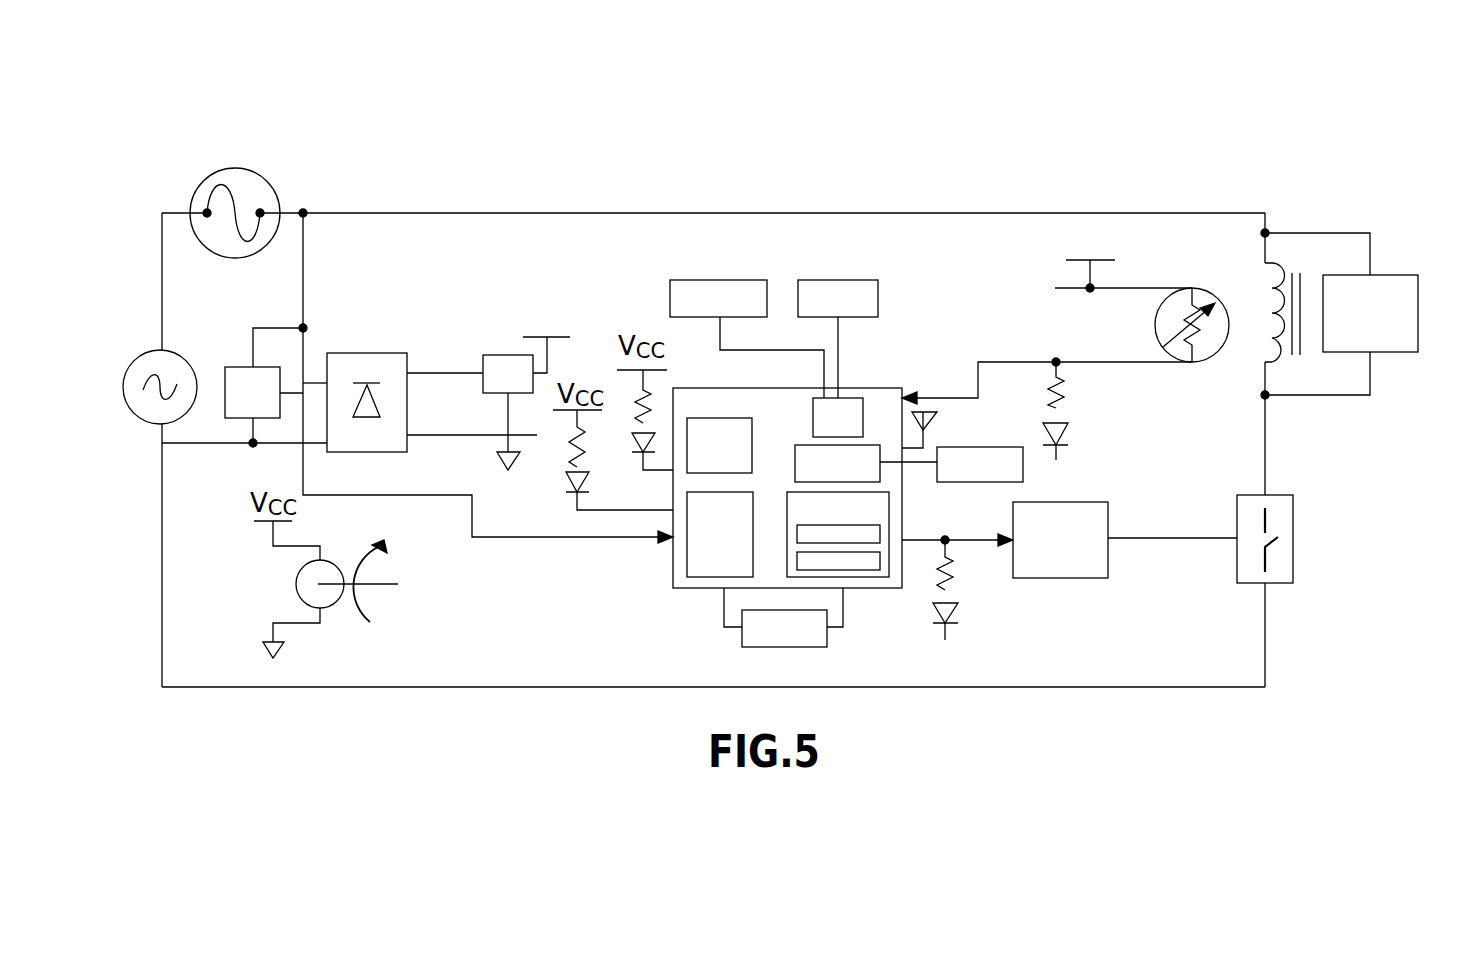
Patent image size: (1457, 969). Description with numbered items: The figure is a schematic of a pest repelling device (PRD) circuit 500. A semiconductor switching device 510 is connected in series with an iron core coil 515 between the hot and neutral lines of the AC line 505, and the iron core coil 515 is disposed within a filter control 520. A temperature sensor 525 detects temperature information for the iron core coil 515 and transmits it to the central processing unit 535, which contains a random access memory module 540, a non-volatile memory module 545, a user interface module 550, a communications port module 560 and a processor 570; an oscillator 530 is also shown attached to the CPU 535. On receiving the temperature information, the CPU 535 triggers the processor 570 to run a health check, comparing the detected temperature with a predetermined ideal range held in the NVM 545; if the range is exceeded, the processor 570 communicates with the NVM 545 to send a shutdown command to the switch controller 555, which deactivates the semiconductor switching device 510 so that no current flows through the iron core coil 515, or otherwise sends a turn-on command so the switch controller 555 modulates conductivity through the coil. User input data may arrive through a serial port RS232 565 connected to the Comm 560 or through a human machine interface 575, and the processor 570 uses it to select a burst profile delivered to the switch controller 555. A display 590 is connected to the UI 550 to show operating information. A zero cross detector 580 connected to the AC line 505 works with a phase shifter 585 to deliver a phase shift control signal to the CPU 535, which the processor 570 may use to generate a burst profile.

The lighting control system 500 is at (1196, 141).
The AC line 505 is at (143, 352).
The semiconductor switching device 510 is at (1293, 508).
The iron core coil 515 is at (1275, 263).
The filter control 520 is at (1405, 275).
The temperature sensor 525 is at (1193, 288).
The oscillator 530 is at (828, 642).
The central processing unit 535 is at (855, 388).
The random access memory module 540 is at (687, 565).
The non-volatile memory module 545 is at (880, 530).
The user interface module 550 is at (865, 408).
The switch controller 555 is at (1108, 515).
The communications port module 560 is at (795, 458).
The RS232 interface 565 is at (1000, 447).
The processor 570 is at (707, 418).
The human machine interface 575 is at (820, 280).
The zero cross detector 580 is at (250, 447).
The phase shifter 585 is at (490, 355).
The display 590 is at (713, 280).